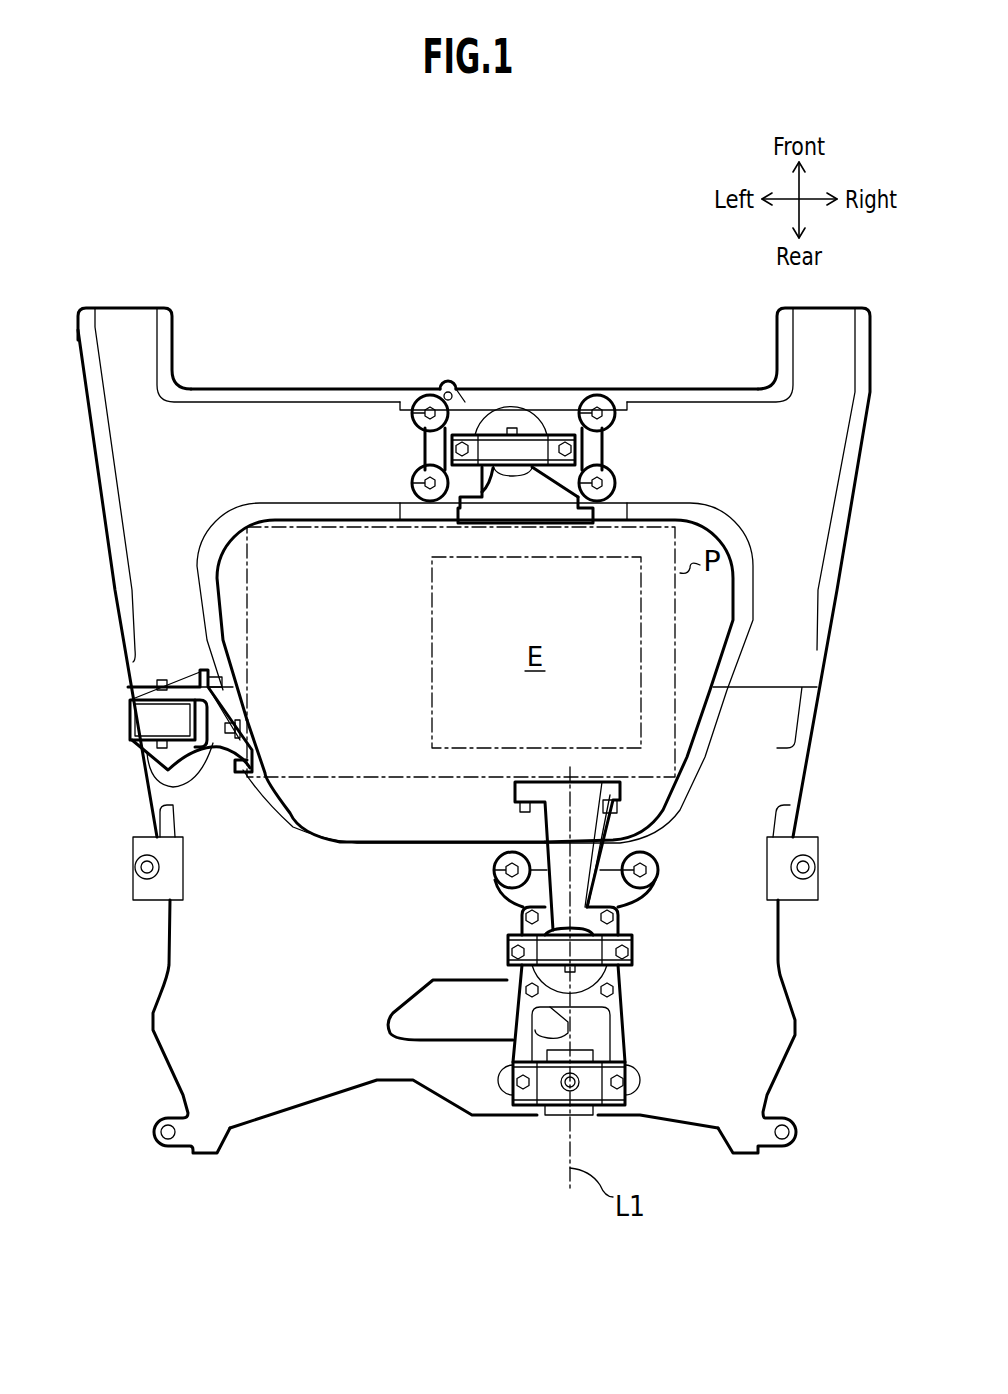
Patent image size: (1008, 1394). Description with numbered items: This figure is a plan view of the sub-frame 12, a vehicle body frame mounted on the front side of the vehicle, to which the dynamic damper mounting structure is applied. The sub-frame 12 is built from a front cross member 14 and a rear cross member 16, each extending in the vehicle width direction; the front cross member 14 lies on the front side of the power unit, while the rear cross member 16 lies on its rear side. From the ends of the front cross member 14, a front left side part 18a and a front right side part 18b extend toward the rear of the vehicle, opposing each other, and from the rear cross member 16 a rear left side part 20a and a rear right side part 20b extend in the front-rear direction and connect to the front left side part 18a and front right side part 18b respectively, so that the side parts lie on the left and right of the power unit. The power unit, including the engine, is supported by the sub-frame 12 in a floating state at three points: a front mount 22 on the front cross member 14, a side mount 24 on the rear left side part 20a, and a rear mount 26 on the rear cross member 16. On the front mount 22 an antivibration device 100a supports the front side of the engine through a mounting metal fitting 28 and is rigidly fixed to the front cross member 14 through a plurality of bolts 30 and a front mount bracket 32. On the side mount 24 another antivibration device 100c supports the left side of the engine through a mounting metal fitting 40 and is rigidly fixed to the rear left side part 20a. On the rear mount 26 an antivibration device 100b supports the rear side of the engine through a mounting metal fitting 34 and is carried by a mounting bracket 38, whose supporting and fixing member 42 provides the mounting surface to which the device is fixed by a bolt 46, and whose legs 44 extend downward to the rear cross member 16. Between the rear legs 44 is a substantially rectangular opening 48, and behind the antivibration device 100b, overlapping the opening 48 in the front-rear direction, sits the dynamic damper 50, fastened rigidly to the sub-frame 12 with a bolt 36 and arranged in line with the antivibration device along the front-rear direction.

The sub-frame 12 is at (868, 518).
The front cross member 14 is at (396, 371).
The rear cross member 16 is at (483, 1135).
The front left side part 18a is at (160, 603).
The front right side part 18b is at (780, 618).
The rear left side part 20a is at (165, 815).
The rear right side part 20b is at (755, 758).
The front mount 22 is at (560, 390).
The side mount 24 is at (110, 712).
The rear mount 26 is at (636, 965).
The mounting metal fitting 28 is at (503, 508).
The bolts 30 is at (410, 418).
The front mount bracket 32 is at (470, 404).
The mounting metal fitting 34 is at (555, 827).
The bolt 36 is at (495, 870).
The mounting bracket 38 is at (641, 1045).
The mounting metal fitting 40 is at (160, 780).
The supporting and fixing member 42 is at (505, 970).
The legs 44 is at (508, 1053).
The bolt 46 is at (520, 917).
The opening 48 is at (520, 1020).
The dynamic damper 50 is at (566, 1123).
The antivibration device 100a is at (518, 397).
The antivibration device 100b is at (587, 993).
The antivibration device 100c is at (107, 734).